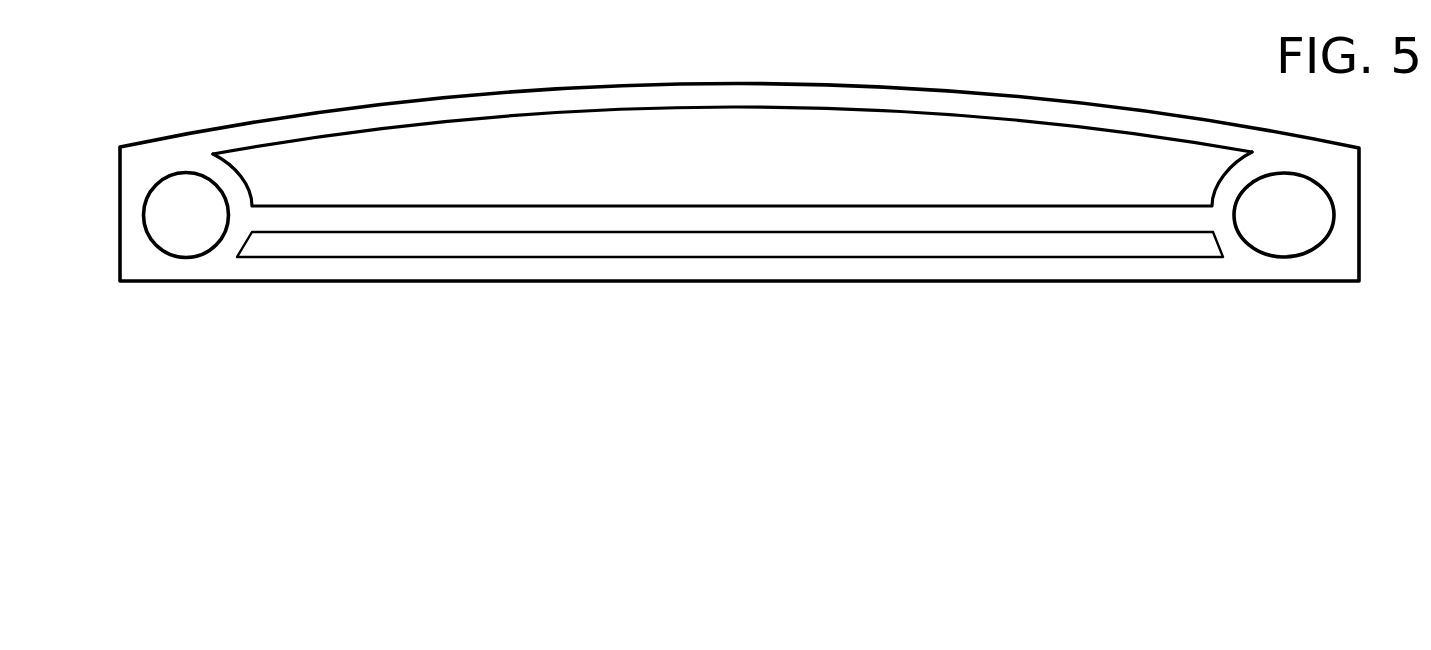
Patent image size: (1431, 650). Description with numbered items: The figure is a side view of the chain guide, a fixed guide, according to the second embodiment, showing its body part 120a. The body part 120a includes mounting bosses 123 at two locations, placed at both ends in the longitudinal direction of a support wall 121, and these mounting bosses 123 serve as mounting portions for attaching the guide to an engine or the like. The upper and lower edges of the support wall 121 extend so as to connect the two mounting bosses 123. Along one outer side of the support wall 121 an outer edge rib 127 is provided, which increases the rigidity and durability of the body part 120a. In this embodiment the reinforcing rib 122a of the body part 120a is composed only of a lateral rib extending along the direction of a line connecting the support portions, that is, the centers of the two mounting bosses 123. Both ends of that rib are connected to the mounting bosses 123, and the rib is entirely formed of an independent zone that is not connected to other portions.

The body part 120a is at (215, 110).
The support wall 121 is at (452, 155).
The reinforcing rib 122a is at (617, 218).
The mounting boss 123 is at (235, 223).
The outer edge rib 127 is at (930, 100).